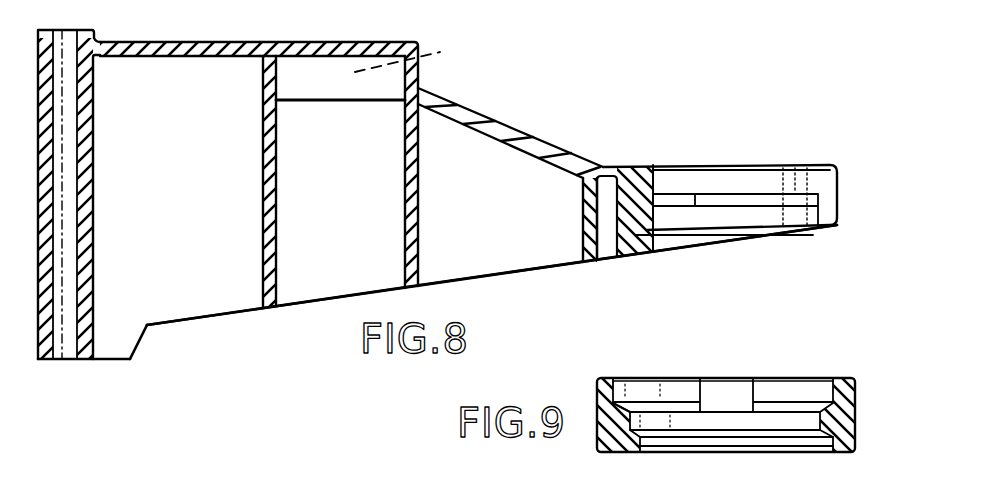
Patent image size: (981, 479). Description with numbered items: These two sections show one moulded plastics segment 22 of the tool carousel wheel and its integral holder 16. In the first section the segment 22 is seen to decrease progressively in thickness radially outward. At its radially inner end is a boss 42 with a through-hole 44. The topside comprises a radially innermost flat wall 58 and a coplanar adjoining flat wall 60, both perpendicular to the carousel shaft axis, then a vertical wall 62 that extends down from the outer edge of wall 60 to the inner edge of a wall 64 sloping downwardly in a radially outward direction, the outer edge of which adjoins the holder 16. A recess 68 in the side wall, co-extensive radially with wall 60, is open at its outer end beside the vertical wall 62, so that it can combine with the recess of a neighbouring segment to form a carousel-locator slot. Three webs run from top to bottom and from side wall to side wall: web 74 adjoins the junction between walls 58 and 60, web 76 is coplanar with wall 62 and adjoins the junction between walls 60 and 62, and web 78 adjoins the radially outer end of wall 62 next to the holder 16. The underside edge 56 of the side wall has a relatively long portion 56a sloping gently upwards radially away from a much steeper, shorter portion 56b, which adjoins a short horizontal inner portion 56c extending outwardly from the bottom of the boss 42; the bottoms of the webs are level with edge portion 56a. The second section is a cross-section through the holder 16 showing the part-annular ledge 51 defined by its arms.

In FIG. 8, the holder 16 is at (724, 178).
In FIG. 9, the holder 16 is at (787, 390).
In FIG. 8, the segment 22 is at (508, 310).
In FIG. 8, the boss 42 is at (90, 143).
In FIG. 8, the through-hole 44 is at (73, 173).
In FIG. 9, the part-annular ledge 51 is at (625, 420).
In FIG. 8, the underside edge 56 is at (293, 307).
In FIG. 8, the long edge portion 56a is at (525, 270).
In FIG. 8, the steeply sloping edge portion 56b is at (148, 327).
In FIG. 8, the horizontal inner edge portion 56c is at (110, 365).
In FIG. 8, the radially innermost flat wall 58 is at (168, 42).
In FIG. 8, the adjoining flat wall 60 is at (352, 42).
In FIG. 8, the vertical wall 62 is at (418, 77).
In FIG. 8, the sloping wall 64 is at (507, 125).
In FIG. 8, the recess 68 is at (417, 55).
In FIG. 8, the web 74 is at (263, 168).
In FIG. 8, the web 76 is at (405, 166).
In FIG. 8, the web 78 is at (583, 212).